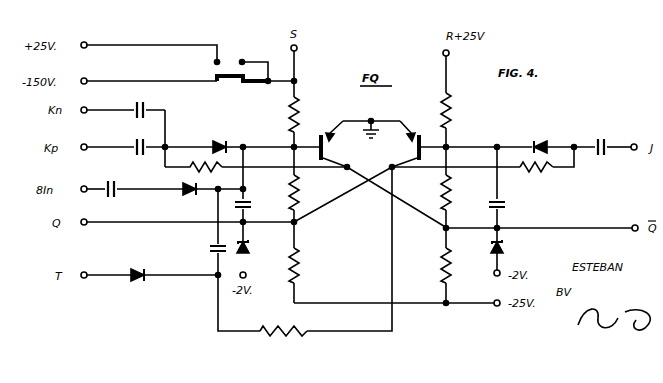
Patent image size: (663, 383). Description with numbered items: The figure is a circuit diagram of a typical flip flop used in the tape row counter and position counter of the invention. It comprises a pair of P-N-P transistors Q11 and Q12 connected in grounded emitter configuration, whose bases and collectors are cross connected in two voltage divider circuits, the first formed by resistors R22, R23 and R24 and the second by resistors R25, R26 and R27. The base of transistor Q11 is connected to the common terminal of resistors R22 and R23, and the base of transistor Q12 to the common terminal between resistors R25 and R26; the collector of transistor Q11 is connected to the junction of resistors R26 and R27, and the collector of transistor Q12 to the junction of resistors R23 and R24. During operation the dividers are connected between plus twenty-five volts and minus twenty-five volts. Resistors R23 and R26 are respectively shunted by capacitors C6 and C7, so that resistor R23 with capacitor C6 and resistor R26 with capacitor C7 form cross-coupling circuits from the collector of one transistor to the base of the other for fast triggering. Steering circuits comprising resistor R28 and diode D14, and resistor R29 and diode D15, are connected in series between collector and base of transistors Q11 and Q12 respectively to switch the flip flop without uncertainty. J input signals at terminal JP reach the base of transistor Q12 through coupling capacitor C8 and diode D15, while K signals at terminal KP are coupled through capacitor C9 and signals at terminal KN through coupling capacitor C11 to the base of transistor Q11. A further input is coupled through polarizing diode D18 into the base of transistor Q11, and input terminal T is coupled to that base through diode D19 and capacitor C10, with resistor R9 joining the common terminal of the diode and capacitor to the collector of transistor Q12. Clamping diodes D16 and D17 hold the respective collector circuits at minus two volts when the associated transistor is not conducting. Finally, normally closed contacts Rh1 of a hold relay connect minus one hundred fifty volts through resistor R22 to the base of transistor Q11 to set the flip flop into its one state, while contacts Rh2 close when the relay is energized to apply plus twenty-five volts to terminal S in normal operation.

The hold relay contacts Rh1 is at (255, 91).
The hold relay contacts Rh2 is at (243, 60).
The resistor R22 is at (296, 112).
The resistor R23 is at (306, 192).
The resistor R24 is at (307, 265).
The resistor R25 is at (446, 116).
The resistor R26 is at (432, 192).
The resistor R27 is at (430, 265).
The resistor R28 is at (193, 152).
The resistor R29 is at (532, 171).
The resistor R9 is at (265, 335).
The capacitor C6 is at (252, 208).
The capacitor C7 is at (506, 210).
The coupling capacitor C8 is at (601, 155).
The capacitor C9 is at (128, 141).
The capacitor C10 is at (209, 249).
The coupling capacitor C11 is at (130, 103).
The diode D14 is at (217, 142).
The diode D15 is at (540, 140).
The clamping diode D16 is at (249, 247).
The clamping diode D17 is at (491, 248).
The polarizing diode D18 is at (183, 189).
The diode D19 is at (138, 281).
The transistor Q11 is at (384, 174).
The transistor Q12 is at (356, 171).